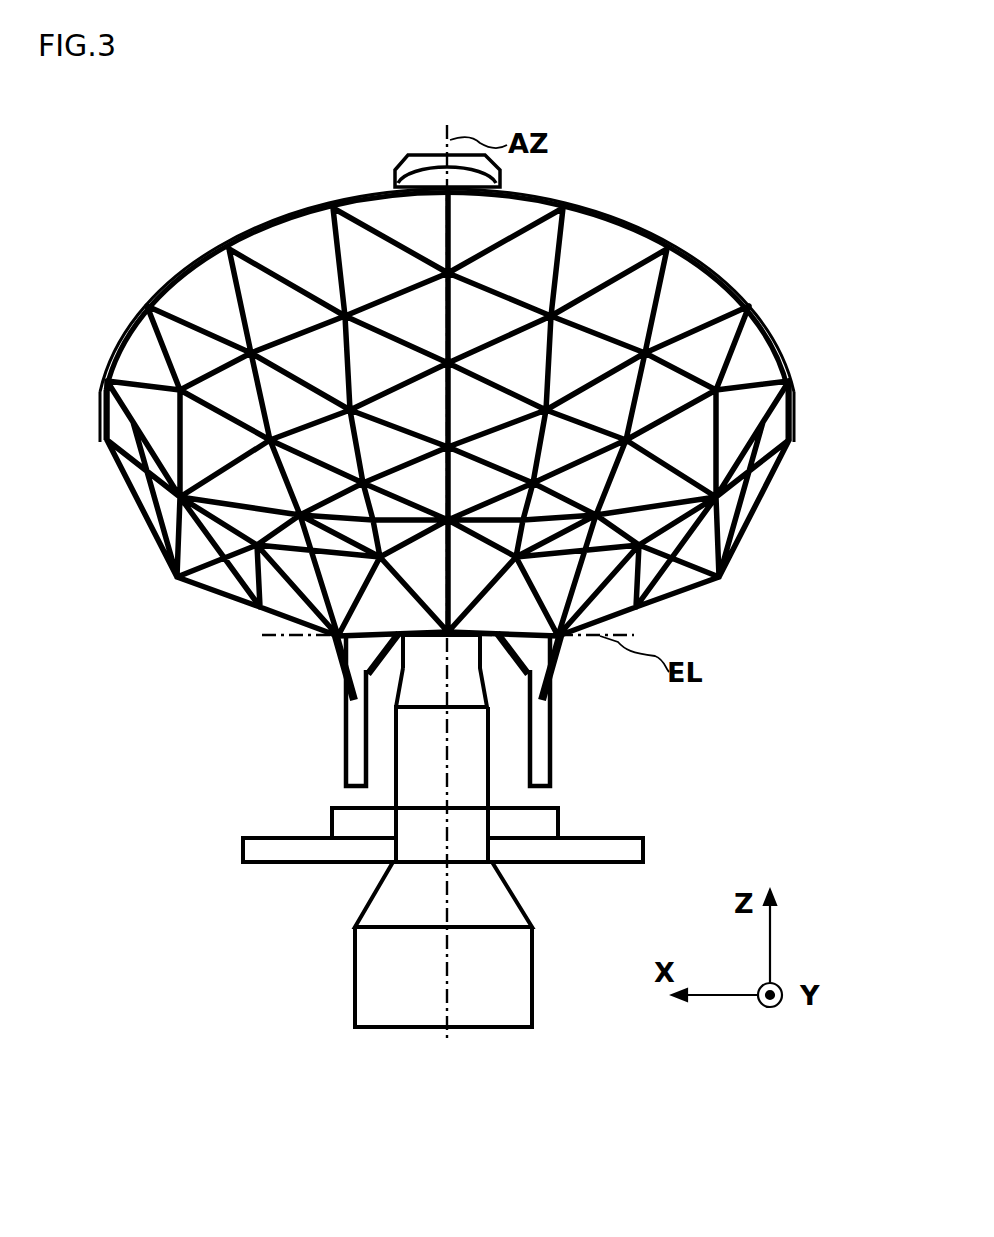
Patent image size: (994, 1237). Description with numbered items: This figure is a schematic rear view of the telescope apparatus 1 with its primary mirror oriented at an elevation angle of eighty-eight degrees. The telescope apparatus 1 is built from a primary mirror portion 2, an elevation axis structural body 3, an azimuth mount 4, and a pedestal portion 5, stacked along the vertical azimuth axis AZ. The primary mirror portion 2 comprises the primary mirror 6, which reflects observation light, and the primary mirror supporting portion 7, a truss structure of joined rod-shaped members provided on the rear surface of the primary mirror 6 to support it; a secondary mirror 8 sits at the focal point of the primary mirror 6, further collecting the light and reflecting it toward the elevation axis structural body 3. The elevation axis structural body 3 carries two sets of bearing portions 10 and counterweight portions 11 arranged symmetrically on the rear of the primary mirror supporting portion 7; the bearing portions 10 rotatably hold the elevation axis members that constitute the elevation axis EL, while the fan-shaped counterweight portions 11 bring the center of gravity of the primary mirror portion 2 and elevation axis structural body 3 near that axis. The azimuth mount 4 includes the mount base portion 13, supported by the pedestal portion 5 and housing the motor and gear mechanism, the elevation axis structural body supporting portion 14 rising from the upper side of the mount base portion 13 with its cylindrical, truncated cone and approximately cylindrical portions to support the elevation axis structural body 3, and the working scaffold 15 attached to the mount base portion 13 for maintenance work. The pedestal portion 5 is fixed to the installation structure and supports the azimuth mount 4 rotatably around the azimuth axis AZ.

The telescope apparatus 1 is at (308, 198).
The primary mirror portion 2 is at (872, 207).
The elevation axis structural body 3 is at (645, 697).
The azimuth mount 4 is at (228, 757).
The pedestal portion 5 is at (477, 910).
The primary mirror 6 is at (735, 272).
The primary mirror supporting portion 7 is at (745, 340).
The secondary mirror 8 is at (470, 178).
The bearing portion 10 is at (520, 643).
The counterweight portion 11 is at (530, 713).
The mount base portion 13 is at (347, 832).
The elevation axis structural body supporting portion 14 is at (412, 802).
The working scaffold 15 is at (262, 852).